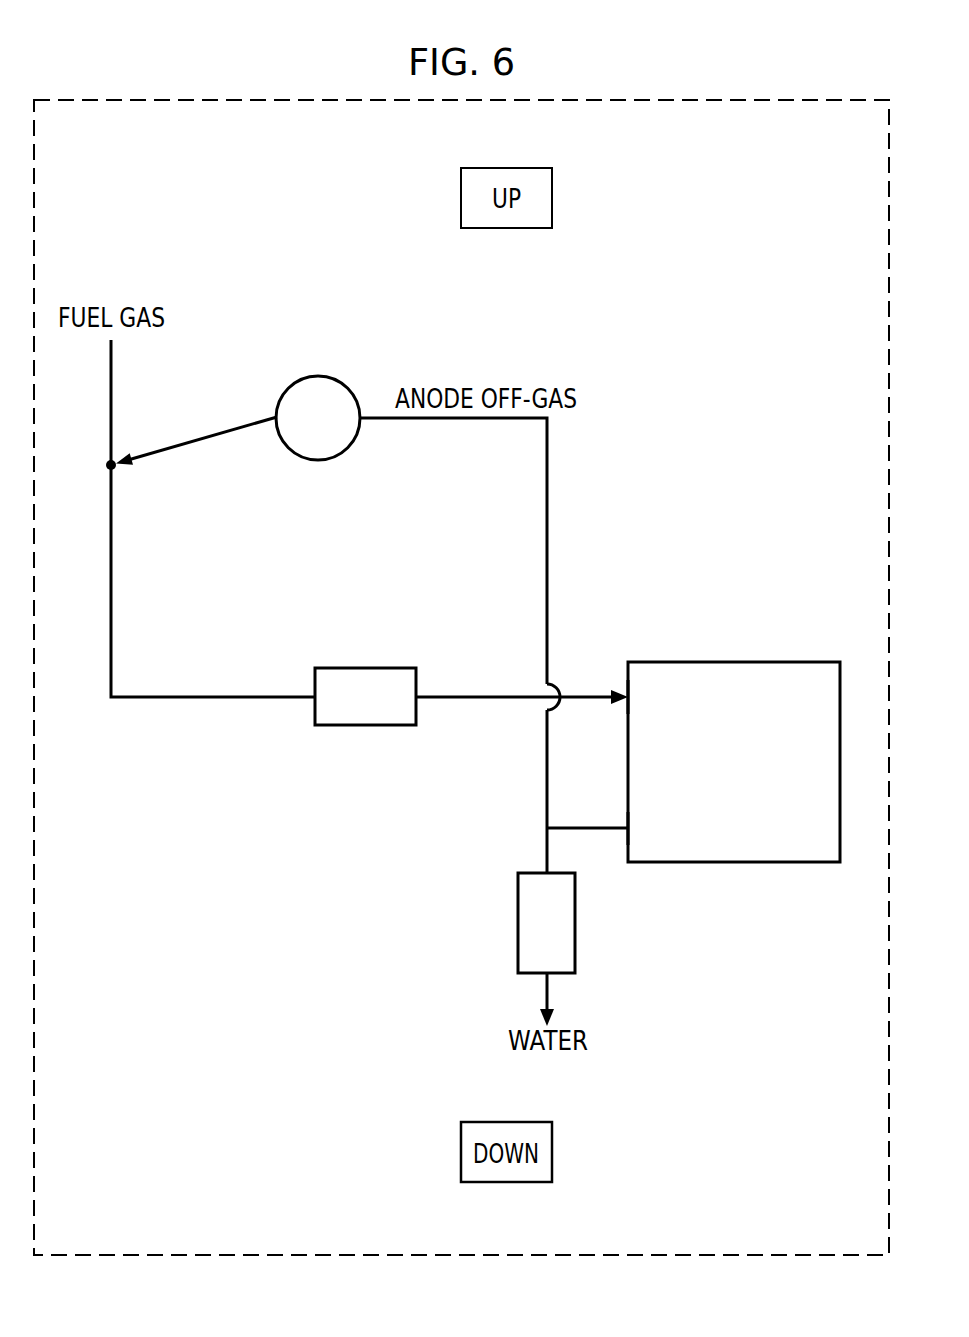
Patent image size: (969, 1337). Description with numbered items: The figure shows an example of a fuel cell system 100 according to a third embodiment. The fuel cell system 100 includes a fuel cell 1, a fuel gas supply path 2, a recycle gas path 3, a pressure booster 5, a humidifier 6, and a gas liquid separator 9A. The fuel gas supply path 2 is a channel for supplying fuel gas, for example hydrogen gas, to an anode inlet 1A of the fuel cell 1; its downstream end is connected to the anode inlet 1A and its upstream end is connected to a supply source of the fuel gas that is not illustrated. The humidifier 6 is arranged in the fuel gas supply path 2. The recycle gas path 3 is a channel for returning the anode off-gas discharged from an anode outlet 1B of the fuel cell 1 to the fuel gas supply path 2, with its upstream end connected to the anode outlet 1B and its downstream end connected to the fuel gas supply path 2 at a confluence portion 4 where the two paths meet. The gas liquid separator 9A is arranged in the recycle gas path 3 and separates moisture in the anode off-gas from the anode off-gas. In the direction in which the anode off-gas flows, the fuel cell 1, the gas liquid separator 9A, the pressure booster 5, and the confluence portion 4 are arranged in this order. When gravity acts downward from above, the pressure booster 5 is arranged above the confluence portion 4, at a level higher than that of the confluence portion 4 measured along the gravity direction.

The fuel cell system 100 is at (659, 308).
The fuel cell 1 is at (744, 781).
The anode inlet 1A is at (630, 697).
The anode outlet 1B is at (630, 828).
The fuel gas supply path 2 is at (205, 698).
The recycle gas path 3 is at (376, 416).
The confluence portion 4 is at (108, 472).
The pressure booster 5 is at (328, 431).
The humidifier 6 is at (375, 710).
The gas liquid separator 9A is at (566, 940).